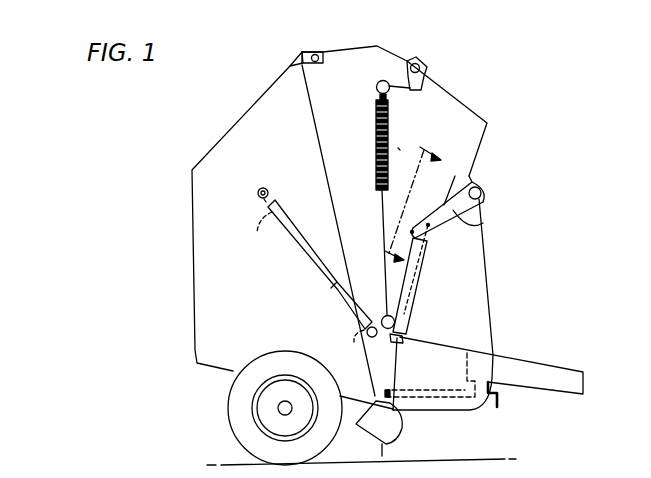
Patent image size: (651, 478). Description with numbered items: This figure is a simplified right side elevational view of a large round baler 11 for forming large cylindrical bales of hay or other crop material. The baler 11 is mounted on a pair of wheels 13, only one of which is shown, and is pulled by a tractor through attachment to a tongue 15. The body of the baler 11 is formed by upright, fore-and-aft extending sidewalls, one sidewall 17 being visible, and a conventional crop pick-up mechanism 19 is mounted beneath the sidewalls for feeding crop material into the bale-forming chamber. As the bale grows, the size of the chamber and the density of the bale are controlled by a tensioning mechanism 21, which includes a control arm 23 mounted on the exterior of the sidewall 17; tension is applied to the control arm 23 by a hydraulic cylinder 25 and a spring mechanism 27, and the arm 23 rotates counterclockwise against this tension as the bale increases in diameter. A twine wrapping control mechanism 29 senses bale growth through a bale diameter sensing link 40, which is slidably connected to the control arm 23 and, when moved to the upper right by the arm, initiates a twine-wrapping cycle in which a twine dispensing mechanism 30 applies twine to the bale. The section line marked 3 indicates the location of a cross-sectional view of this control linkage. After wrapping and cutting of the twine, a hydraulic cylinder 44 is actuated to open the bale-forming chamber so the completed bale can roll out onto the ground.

The large round baler 11 is at (388, 38).
The wheels 13 is at (231, 412).
The tongue 15 is at (528, 365).
The sidewall 17 is at (463, 288).
The crop pick-up mechanism 19 is at (400, 430).
The tensioning mechanism 21 is at (402, 142).
The control arm 23 is at (483, 223).
The hydraulic cylinder 25 is at (410, 307).
The spring mechanism 27 is at (370, 130).
The twine wrapping control mechanism 29 is at (436, 362).
The twine dispensing mechanism 30 is at (428, 393).
The section line 3- 3 is at (413, 198).
The bale diameter sensing link 40 is at (449, 197).
The hydraulic cylinder 44 is at (297, 245).